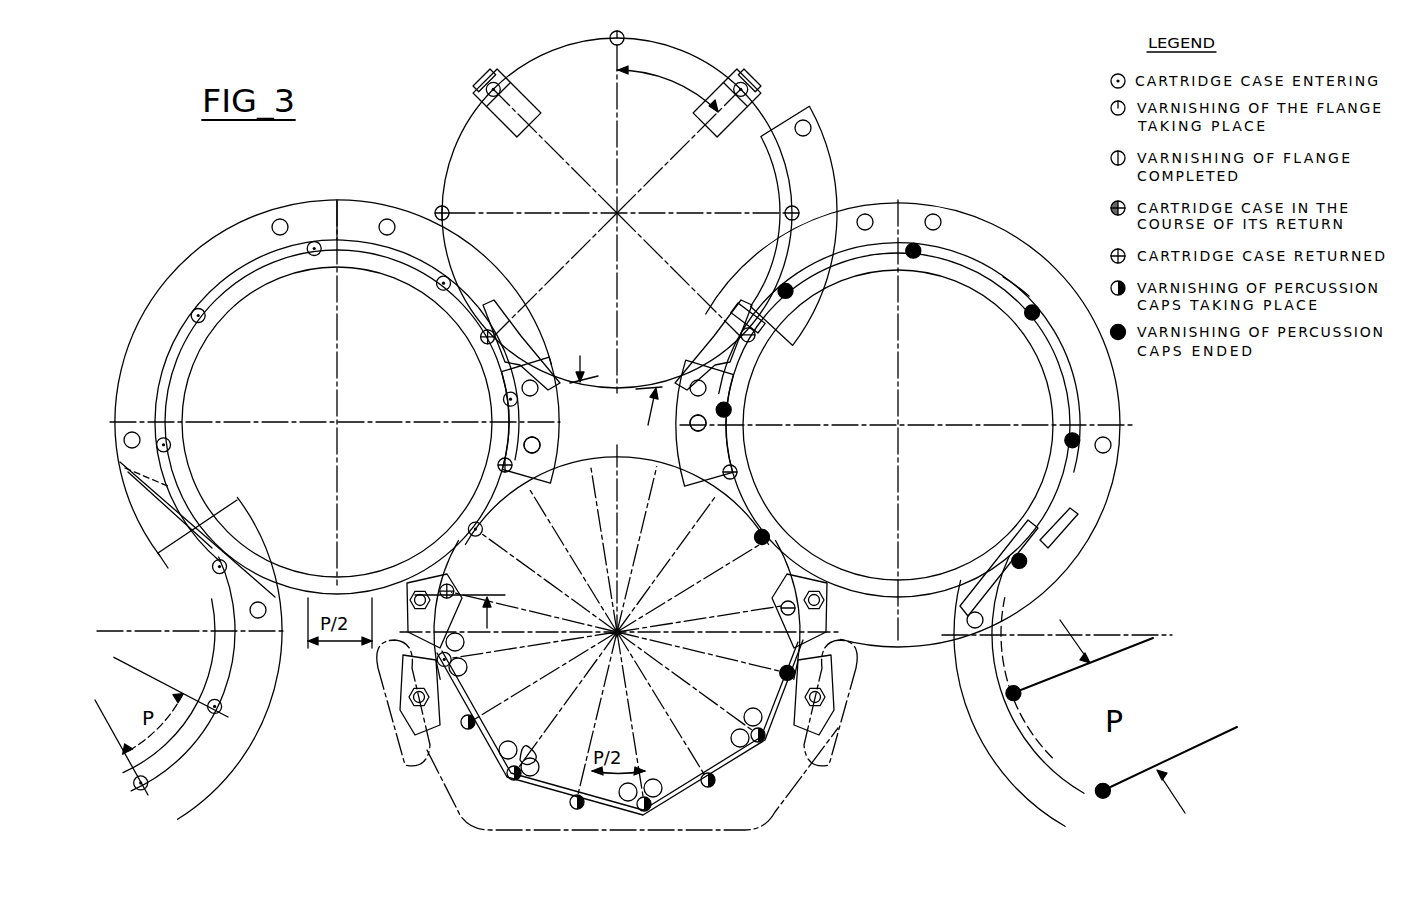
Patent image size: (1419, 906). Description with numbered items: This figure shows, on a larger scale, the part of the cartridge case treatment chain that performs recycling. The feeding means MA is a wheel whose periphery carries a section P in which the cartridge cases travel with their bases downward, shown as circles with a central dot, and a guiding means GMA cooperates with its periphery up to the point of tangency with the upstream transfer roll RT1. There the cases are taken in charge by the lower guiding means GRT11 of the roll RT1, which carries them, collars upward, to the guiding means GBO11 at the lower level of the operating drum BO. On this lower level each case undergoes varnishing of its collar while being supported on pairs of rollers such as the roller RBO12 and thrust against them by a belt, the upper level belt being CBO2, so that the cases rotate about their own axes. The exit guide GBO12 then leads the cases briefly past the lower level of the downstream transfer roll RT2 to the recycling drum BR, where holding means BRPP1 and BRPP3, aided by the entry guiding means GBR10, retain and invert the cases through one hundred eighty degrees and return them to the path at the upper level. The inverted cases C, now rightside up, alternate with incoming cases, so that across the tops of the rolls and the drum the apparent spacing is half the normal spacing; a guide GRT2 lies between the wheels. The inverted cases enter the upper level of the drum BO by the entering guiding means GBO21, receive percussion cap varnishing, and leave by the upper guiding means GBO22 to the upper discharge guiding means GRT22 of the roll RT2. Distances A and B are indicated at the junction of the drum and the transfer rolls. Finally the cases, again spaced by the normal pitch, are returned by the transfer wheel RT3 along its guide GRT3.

The recycling drum BR is at (740, 135).
The section P is at (667, 87).
The holding means BRPP1 is at (524, 136).
The holding means BRPP3 is at (707, 136).
The entry guiding means GBR10 is at (824, 152).
The upstream transfer roll RT1 is at (238, 323).
The lower guiding means GRT11 is at (355, 228).
The second transfer wheel guide GRT2 is at (505, 418).
The downstream transfer roll RT2 is at (940, 283).
The upper discharge guiding means GRT22 is at (1012, 268).
The distance A is at (577, 367).
The distance B is at (654, 409).
The cartridge case C is at (461, 613).
The operating drum BO is at (493, 727).
The roller RBO12 is at (537, 752).
The belt CBO2 is at (557, 827).
The guiding means GBO11 is at (428, 690).
The entering guiding means GBO21 is at (398, 703).
The exit guide GBO12 is at (815, 675).
The upper guiding means GBO22 is at (851, 703).
The feeding means MA is at (187, 650).
The guiding means GMA is at (245, 703).
The transfer wheel RT3 is at (1040, 703).
The guide GRT3 is at (1030, 768).